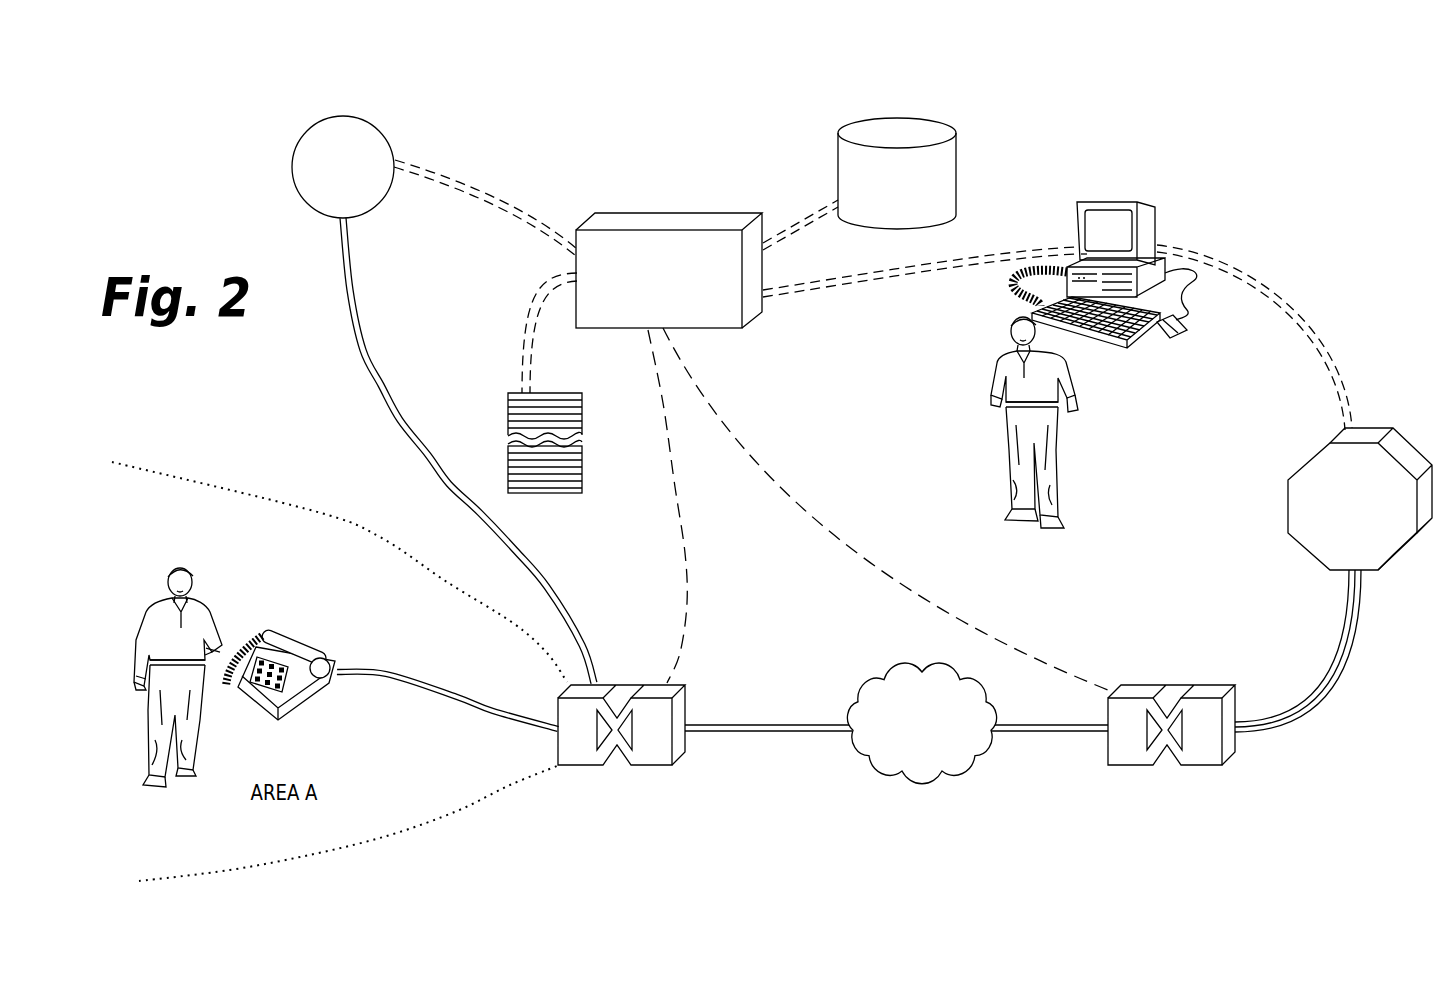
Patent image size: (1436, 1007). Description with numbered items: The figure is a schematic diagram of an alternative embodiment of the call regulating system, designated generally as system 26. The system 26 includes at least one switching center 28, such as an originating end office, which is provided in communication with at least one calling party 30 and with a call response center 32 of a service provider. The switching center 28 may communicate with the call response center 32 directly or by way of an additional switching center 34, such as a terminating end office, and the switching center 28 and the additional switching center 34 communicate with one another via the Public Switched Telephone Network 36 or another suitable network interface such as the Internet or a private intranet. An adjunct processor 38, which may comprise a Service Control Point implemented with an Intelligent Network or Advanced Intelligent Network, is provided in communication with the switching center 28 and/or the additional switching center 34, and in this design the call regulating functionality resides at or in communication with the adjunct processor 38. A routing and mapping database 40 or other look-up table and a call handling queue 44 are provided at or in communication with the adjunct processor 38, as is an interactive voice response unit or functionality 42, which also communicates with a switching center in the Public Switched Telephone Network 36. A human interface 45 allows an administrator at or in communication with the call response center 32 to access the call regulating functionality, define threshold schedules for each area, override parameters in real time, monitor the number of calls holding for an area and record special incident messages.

The system 26 is at (737, 110).
The switching center 28 is at (683, 742).
The calling party 30 is at (320, 638).
The call response center 32 is at (1287, 507).
The additional switching center 34 is at (1235, 743).
The Public Switched Telephone Network 36 is at (893, 771).
The adjunct processor 38 is at (621, 213).
The routing and mapping database 40 is at (956, 167).
The interactive voice response unit or functionality 42 is at (292, 170).
The call handling queue 44 is at (582, 410).
The human interface 45 is at (1160, 228).